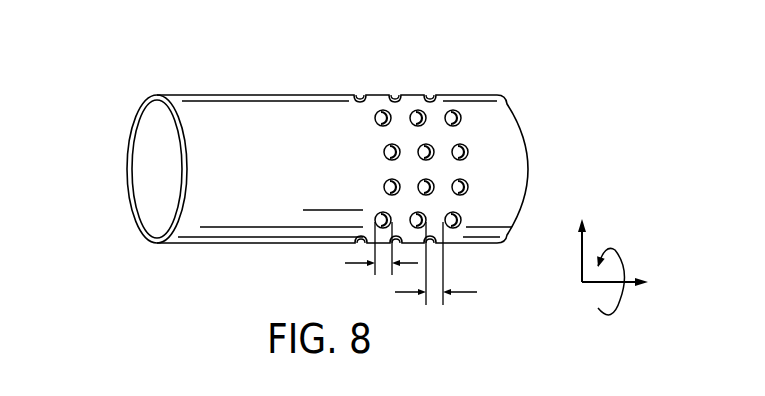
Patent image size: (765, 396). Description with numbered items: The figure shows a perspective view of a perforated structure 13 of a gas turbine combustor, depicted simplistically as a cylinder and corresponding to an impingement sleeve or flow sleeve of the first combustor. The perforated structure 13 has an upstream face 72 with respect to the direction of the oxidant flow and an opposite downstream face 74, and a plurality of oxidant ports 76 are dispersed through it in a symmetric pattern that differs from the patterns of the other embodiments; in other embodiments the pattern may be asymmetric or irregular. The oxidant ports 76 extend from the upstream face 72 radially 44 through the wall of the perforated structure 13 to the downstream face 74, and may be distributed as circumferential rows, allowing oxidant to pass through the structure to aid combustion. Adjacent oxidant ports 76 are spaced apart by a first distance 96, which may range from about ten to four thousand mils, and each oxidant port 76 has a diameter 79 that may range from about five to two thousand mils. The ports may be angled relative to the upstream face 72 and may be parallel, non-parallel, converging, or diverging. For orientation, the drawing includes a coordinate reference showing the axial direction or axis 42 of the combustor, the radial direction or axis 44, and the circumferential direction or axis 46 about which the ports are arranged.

The perforated structure 13 is at (485, 58).
The upstream face 72 is at (508, 165).
The downstream face 74 is at (132, 128).
The oxidant ports 76 is at (459, 112).
The diameter 79 is at (356, 264).
The first distance 96 is at (465, 294).
The axial direction or axis 42 is at (588, 290).
The radial direction or axis 44 is at (581, 262).
The circumferential direction or axis 46 is at (625, 256).